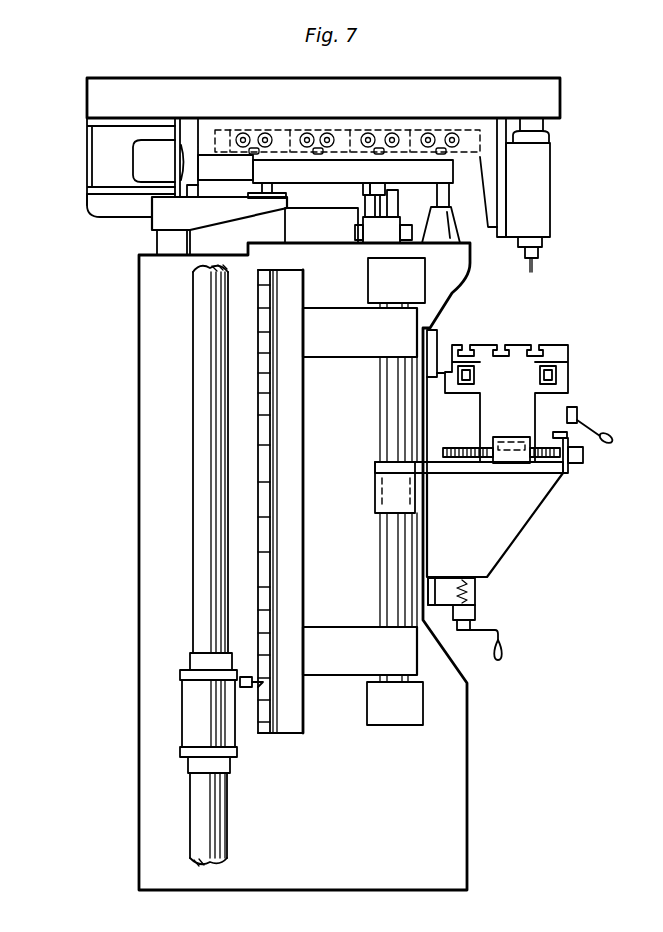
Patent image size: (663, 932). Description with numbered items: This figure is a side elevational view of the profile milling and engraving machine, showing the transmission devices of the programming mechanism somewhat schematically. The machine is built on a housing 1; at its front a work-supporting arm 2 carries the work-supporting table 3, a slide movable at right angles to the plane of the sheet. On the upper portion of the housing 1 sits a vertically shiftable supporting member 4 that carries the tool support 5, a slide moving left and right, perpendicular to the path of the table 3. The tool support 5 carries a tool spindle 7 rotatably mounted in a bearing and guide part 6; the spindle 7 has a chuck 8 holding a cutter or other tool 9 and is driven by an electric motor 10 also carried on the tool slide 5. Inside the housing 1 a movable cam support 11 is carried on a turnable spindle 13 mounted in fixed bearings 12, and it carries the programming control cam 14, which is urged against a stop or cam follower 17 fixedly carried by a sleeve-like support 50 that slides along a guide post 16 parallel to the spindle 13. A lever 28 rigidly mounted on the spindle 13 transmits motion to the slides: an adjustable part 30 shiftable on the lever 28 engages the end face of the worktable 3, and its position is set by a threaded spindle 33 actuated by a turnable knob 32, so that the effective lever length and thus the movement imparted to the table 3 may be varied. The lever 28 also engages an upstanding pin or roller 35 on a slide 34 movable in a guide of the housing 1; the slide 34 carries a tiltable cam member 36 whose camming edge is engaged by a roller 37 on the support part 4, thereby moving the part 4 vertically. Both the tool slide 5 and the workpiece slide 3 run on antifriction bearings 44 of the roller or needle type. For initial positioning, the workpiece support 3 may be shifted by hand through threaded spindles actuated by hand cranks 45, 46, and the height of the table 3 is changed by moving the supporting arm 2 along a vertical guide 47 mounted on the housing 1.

The housing 1 is at (415, 810).
The work-supporting arm 2 is at (488, 535).
The work-supporting table 3 is at (503, 376).
The vertically shiftable supporting member 4 is at (280, 168).
The tool support 5 is at (233, 127).
The bearing and guide part 6 is at (535, 183).
The tool spindle 7 is at (540, 130).
The chuck 8 is at (540, 251).
The cutter or other tool 9 is at (534, 267).
The electric motor 10 is at (105, 157).
The movable cam support 11 is at (290, 479).
The fixed bearings 12 is at (390, 274).
The turnable spindle 13 is at (172, 247).
The programming control cam 14 is at (258, 380).
The guide post 16 is at (203, 530).
The cam follower 17 is at (242, 681).
The lever 28 is at (172, 214).
The adjustable part 30 is at (513, 460).
The turnable knob 32 is at (574, 463).
The threaded spindle 33 is at (456, 448).
The slide 34 is at (394, 205).
The upstanding pin or roller 35 is at (373, 208).
The tiltable cam member 36 is at (370, 190).
The roller 37 is at (386, 187).
The antifriction bearings 44 is at (392, 133).
The hand crank 45 is at (482, 637).
The hand crank 46 is at (583, 422).
The vertical guide 47 is at (432, 593).
The sleeve-like support 50 is at (197, 726).